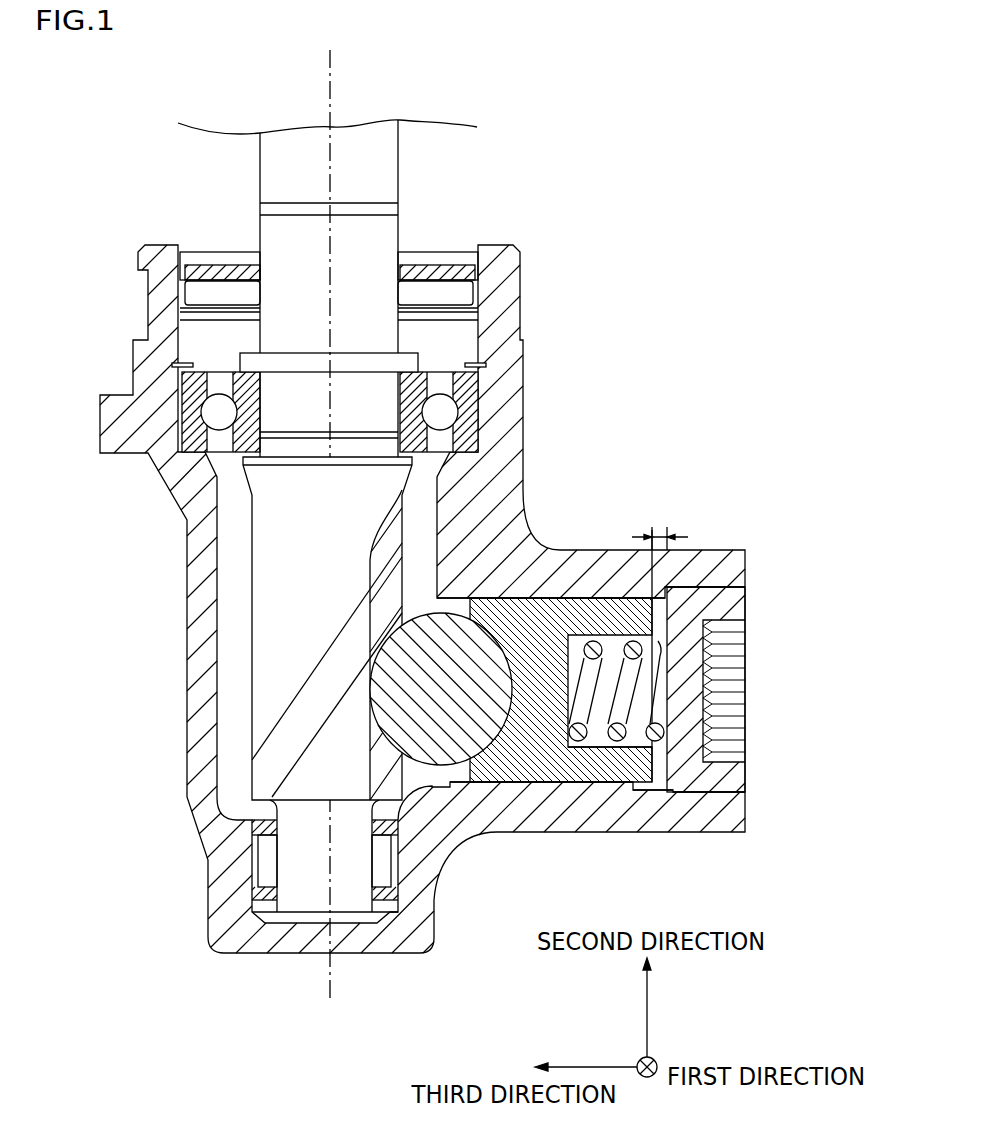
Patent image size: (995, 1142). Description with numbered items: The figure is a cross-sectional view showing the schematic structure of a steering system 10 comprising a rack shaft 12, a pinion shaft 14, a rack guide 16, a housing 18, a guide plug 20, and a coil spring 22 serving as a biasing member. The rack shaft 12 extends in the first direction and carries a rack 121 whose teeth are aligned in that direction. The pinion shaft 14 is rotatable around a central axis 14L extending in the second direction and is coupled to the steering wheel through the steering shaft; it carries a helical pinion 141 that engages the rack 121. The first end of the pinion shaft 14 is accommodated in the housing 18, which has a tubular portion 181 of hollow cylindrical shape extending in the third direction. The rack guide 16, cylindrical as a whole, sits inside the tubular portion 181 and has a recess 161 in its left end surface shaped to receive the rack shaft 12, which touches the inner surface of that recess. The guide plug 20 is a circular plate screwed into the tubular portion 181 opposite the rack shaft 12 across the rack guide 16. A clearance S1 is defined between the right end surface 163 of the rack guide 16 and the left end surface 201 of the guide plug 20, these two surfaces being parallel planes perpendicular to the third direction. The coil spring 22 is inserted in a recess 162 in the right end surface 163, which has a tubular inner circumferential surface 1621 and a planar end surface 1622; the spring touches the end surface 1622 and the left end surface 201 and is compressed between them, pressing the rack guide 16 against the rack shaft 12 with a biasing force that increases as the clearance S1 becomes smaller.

The steering system 10 is at (422, 570).
The rack shaft 12 is at (520, 533).
The pinion shaft 14 is at (388, 178).
The central axis 14L is at (338, 100).
The pinion 141 is at (289, 709).
The rack 121 is at (386, 758).
The rack guide 16 is at (618, 700).
The recess 161 is at (457, 757).
The recess 162 is at (603, 595).
The inner circumferential surface 1621 is at (612, 638).
The end surface 1622 is at (577, 625).
The right end surface 163 is at (655, 755).
The housing 18 is at (422, 599).
The tubular portion 181 is at (595, 824).
The guide plug 20 is at (721, 740).
The left end surface 201 is at (672, 767).
The coil spring 22 is at (580, 734).
The clearance S1 is at (660, 530).